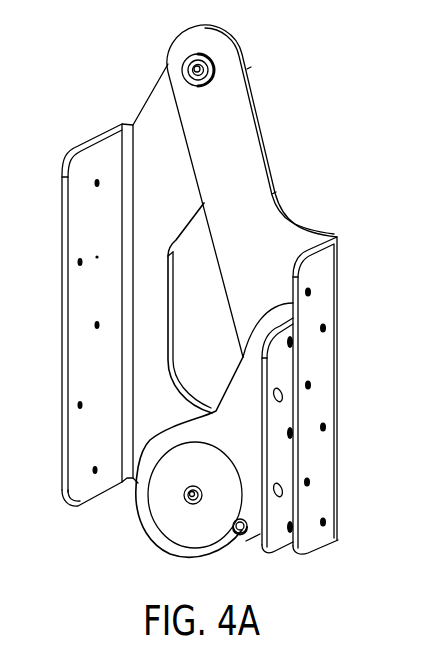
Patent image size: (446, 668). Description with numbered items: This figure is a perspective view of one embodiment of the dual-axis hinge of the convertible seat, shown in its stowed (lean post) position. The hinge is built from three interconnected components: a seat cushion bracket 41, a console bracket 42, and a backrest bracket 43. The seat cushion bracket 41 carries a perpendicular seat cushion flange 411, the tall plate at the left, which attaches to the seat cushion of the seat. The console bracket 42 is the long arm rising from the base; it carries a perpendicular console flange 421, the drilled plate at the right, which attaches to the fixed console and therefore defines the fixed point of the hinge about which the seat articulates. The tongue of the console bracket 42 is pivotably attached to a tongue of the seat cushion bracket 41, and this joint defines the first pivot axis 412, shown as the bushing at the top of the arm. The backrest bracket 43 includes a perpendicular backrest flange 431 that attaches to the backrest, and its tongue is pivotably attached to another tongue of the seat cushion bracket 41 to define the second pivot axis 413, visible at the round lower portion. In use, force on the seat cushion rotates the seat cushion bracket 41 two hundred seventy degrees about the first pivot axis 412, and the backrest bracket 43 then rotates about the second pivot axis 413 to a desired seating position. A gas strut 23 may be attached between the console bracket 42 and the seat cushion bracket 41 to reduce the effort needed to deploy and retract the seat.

The gas strut 23 is at (290, 97).
The seat cushion bracket 41 is at (155, 133).
The seat cushion flange 411 is at (97, 159).
The first pivot axis 412 is at (205, 83).
The second pivot axis 413 is at (186, 500).
The console bracket 42 is at (254, 172).
The console flange 421 is at (326, 283).
The backrest bracket 43 is at (202, 556).
The backrest flange 431 is at (278, 448).